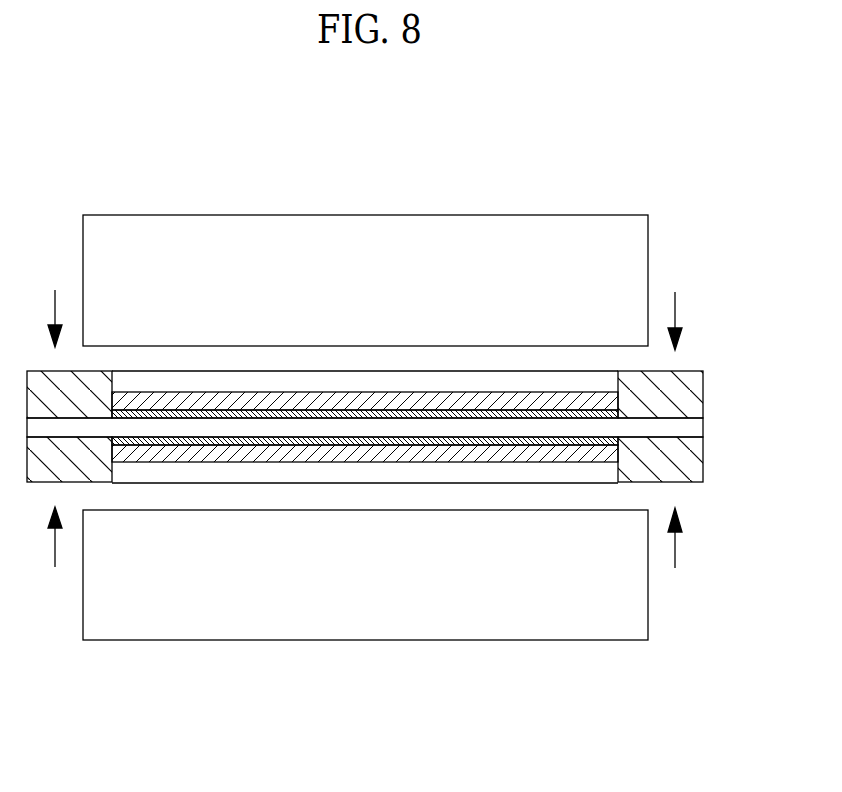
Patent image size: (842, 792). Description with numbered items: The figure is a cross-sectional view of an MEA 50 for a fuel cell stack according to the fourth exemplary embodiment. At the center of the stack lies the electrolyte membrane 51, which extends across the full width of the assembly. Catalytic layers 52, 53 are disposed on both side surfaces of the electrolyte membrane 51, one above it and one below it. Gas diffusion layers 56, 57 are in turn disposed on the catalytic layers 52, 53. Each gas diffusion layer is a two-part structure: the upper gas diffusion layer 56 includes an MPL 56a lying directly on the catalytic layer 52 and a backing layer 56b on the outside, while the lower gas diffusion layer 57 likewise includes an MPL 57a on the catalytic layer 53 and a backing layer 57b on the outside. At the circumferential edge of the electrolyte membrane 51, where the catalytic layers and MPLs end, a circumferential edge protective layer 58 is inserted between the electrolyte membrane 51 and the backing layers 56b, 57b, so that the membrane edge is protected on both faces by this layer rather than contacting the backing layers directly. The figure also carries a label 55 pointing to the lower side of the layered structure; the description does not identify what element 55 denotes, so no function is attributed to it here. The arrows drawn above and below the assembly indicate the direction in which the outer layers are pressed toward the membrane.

The MEA 50 is at (378, 126).
The electrolyte membrane 51 is at (695, 427).
The catalytic layer 52 is at (433, 413).
The catalytic layer 53 is at (358, 443).
The lower frame of laminate 55 is at (470, 483).
The gas diffusion layer 56 is at (603, 162).
The MPL 56a is at (513, 402).
The backing layer 56b is at (587, 233).
The gas diffusion layer 57 is at (308, 694).
The MPL 57a is at (288, 452).
The backing layer 57b is at (226, 617).
The circumferential edge protective layer 58 is at (695, 397).